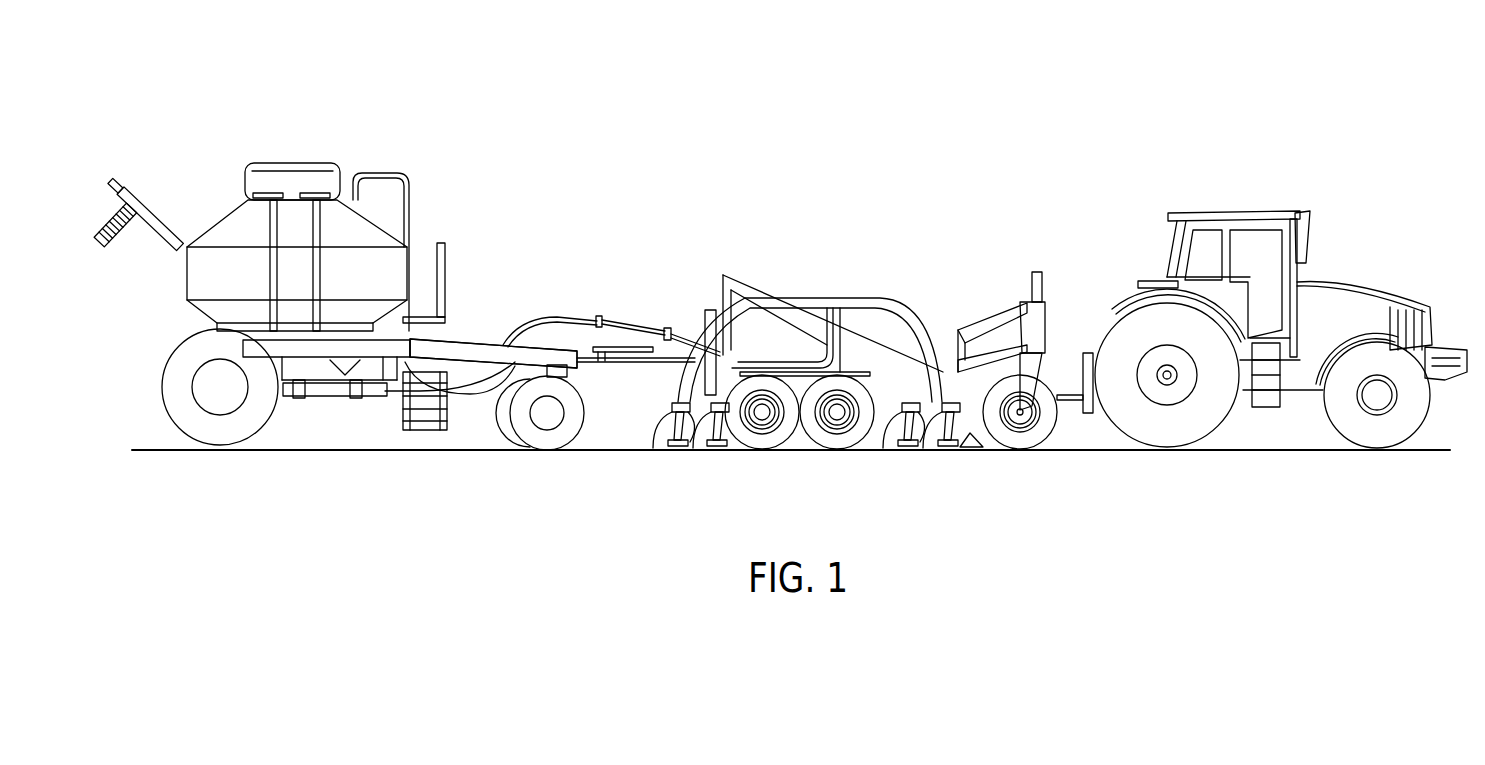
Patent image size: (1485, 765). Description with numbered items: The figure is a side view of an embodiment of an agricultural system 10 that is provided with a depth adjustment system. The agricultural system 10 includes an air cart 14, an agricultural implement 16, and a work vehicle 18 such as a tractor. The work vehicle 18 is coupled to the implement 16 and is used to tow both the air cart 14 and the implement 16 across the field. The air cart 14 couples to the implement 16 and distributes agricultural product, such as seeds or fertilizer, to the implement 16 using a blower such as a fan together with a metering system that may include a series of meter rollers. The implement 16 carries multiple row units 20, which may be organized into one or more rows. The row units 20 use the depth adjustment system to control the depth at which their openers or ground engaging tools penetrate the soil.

The agricultural system 10 is at (1218, 58).
The air cart 14 is at (322, 151).
The agricultural implement 16 is at (869, 380).
The work vehicle 18 is at (1310, 189).
The row units 20 is at (636, 300).